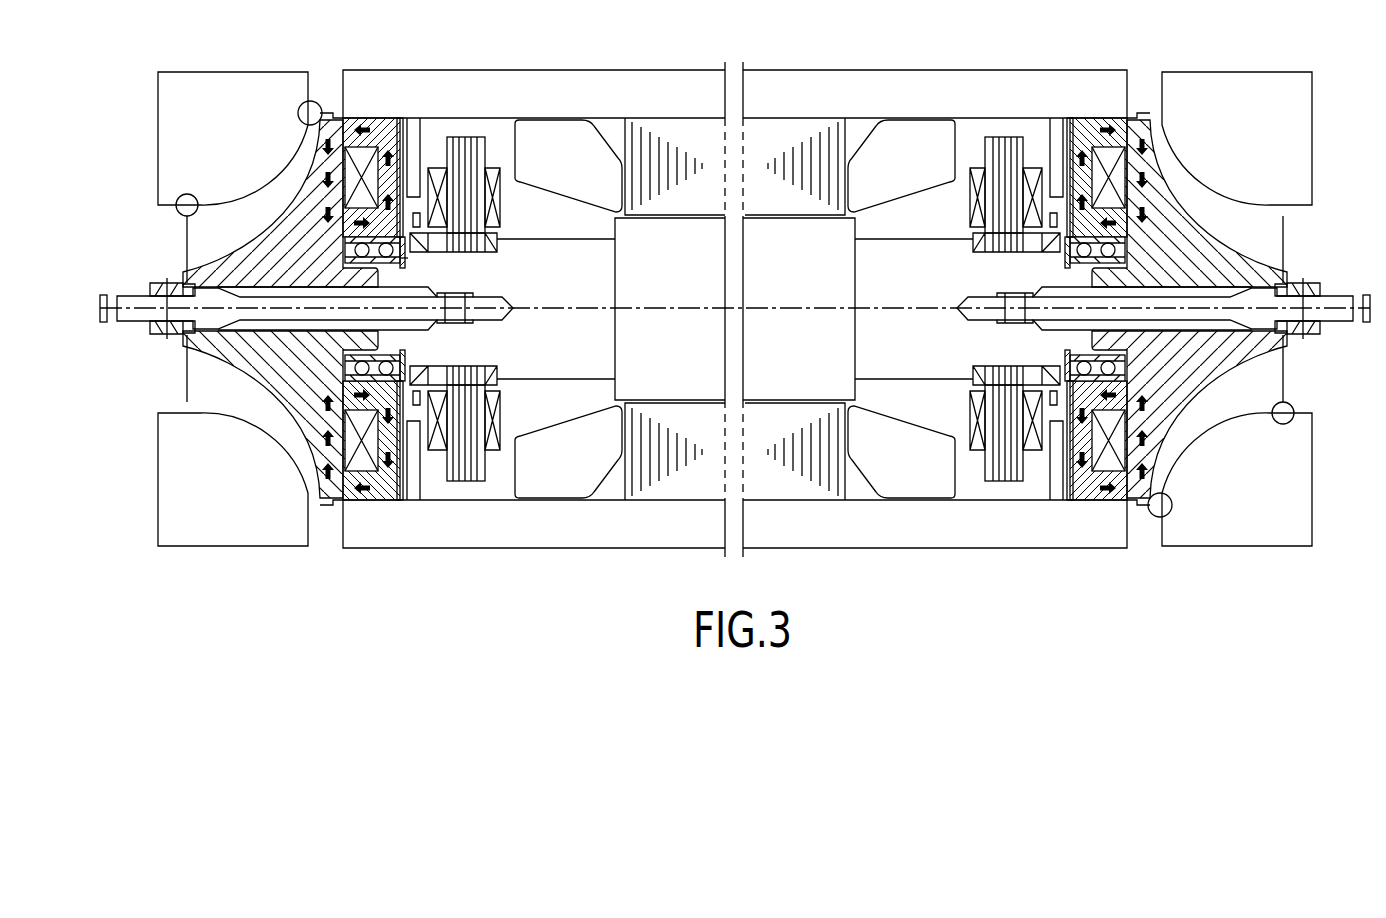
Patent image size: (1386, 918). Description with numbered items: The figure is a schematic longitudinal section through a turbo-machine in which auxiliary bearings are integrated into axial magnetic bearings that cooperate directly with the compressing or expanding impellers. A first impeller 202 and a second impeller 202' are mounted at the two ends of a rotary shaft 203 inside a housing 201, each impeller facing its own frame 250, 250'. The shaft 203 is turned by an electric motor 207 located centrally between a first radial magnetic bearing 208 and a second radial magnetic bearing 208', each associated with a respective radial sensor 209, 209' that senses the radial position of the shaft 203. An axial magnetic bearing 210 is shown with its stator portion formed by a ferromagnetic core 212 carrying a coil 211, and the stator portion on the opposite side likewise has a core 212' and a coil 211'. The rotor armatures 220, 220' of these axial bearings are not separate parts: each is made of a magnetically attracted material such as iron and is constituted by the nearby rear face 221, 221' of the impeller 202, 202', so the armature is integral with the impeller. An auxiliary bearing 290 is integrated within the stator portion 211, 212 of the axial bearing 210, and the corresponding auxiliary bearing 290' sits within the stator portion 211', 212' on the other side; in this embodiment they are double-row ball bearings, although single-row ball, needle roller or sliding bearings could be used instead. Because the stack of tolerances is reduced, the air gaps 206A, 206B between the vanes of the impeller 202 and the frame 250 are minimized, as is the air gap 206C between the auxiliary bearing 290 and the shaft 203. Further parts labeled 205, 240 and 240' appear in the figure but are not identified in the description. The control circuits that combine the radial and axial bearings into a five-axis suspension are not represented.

The housing 201 is at (614, 88).
The first impeller 202 is at (257, 309).
The second impeller 202' is at (1212, 309).
The rotary shaft 203 is at (620, 358).
The bearing sleeve 205 is at (404, 138).
The air gap 206A is at (187, 194).
The air gap 206B is at (300, 108).
The air gap 206C is at (411, 264).
The electric motor 207 is at (689, 112).
The radial magnetic bearing 208 is at (512, 257).
The motor stator 208' is at (957, 361).
The radial sensor 209 is at (428, 352).
The support bracket 209' is at (1042, 267).
The axial magnetic bearing 210 is at (376, 103).
The coil 211 is at (362, 352).
The coil 211' is at (1111, 267).
The ferromagnetic core 212 is at (375, 367).
The ferromagnetic core 212' is at (1096, 252).
The rotor armature 220 is at (284, 316).
The rotor armature 220' is at (1189, 302).
The rear face 221 is at (305, 325).
The rear face 221' is at (1169, 294).
The shaft end 240 is at (735, 296).
The shaft end 240' is at (1165, 296).
The frame 250 is at (233, 287).
The frame 250' is at (1237, 287).
The auxiliary bearing 290 is at (271, 309).
The auxiliary bearing 290' is at (1201, 301).